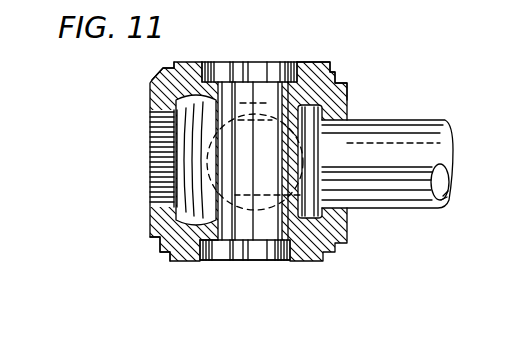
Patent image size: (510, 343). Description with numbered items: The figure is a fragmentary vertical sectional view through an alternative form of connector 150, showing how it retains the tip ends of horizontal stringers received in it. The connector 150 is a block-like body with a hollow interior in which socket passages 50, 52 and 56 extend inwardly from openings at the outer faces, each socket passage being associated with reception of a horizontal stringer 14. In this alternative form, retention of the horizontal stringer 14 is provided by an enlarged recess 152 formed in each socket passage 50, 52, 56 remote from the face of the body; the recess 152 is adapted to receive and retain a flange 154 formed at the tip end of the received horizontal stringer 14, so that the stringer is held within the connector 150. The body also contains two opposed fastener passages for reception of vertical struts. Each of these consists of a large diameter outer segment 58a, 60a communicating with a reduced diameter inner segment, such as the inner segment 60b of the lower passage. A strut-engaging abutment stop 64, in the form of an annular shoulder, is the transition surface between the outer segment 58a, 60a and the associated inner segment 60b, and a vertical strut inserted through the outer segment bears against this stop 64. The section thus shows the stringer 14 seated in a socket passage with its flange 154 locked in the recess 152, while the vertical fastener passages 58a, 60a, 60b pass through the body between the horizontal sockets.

The horizontal stringer 14 is at (406, 121).
The socket passage 50 is at (293, 62).
The socket passage 52 is at (346, 216).
The socket passage 56 is at (151, 221).
The large diameter outer segment 58a is at (268, 95).
The large diameter outer segment 60a is at (286, 250).
The reduced diameter inner segment 60b is at (268, 242).
The strut-engaging abutment stop 64 is at (287, 73).
The connector 150 is at (160, 253).
The enlarged recess 152 is at (187, 63).
The flange 154 is at (323, 112).